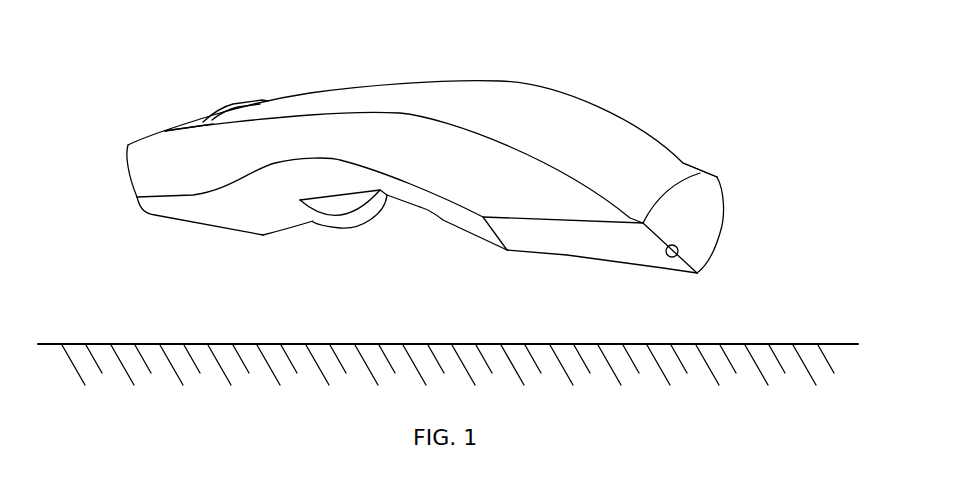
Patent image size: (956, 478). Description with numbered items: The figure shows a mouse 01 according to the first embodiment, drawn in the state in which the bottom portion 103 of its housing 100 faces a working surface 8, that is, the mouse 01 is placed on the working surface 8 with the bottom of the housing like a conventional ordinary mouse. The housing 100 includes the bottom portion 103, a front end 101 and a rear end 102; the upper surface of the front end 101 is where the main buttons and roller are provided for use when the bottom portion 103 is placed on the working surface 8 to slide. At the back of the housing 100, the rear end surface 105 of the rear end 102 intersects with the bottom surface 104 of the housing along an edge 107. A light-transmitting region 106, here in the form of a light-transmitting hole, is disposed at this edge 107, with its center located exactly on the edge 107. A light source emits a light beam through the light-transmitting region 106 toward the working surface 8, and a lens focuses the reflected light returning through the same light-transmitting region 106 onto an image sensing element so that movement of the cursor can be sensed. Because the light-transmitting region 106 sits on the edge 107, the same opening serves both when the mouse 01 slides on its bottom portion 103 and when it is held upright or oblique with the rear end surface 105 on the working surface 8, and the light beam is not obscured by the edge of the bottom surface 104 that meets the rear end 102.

The mouse 01 is at (455, 171).
The housing 100 is at (488, 98).
The front end 101 is at (172, 131).
The rear end 102 is at (683, 163).
The bottom portion 103 is at (530, 238).
The bottom surface 104 is at (572, 242).
The rear end surface 105 is at (707, 227).
The light-transmitting region 106 is at (666, 257).
The edge 107 is at (700, 254).
The working surface 8 is at (805, 343).